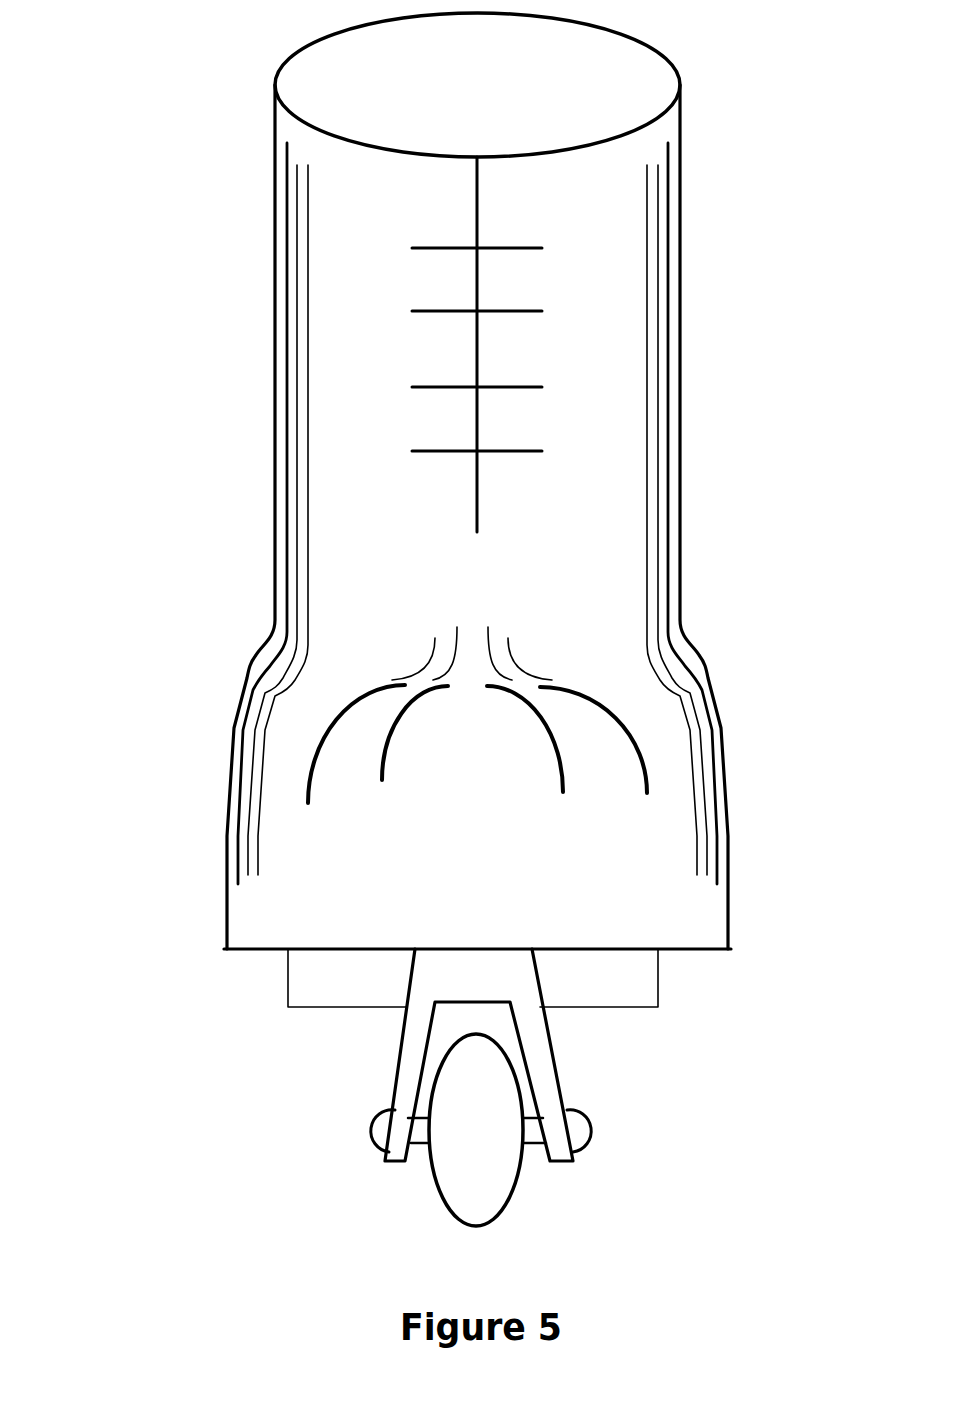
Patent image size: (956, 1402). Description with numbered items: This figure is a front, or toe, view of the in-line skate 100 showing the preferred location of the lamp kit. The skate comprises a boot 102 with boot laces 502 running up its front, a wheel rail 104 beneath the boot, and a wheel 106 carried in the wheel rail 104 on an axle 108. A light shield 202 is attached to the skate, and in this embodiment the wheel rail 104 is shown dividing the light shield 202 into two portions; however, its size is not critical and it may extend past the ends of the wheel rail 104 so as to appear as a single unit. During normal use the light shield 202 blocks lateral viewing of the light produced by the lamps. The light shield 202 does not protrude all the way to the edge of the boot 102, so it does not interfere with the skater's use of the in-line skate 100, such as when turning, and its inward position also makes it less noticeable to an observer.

The in-line skate 100 is at (163, 375).
The boot 102 is at (612, 363).
The wheel rail 104 is at (537, 1048).
The wheel 106 is at (472, 1158).
The axle 108 is at (377, 1127).
The light shield 202 is at (313, 975).
The boot laces 502 is at (433, 243).